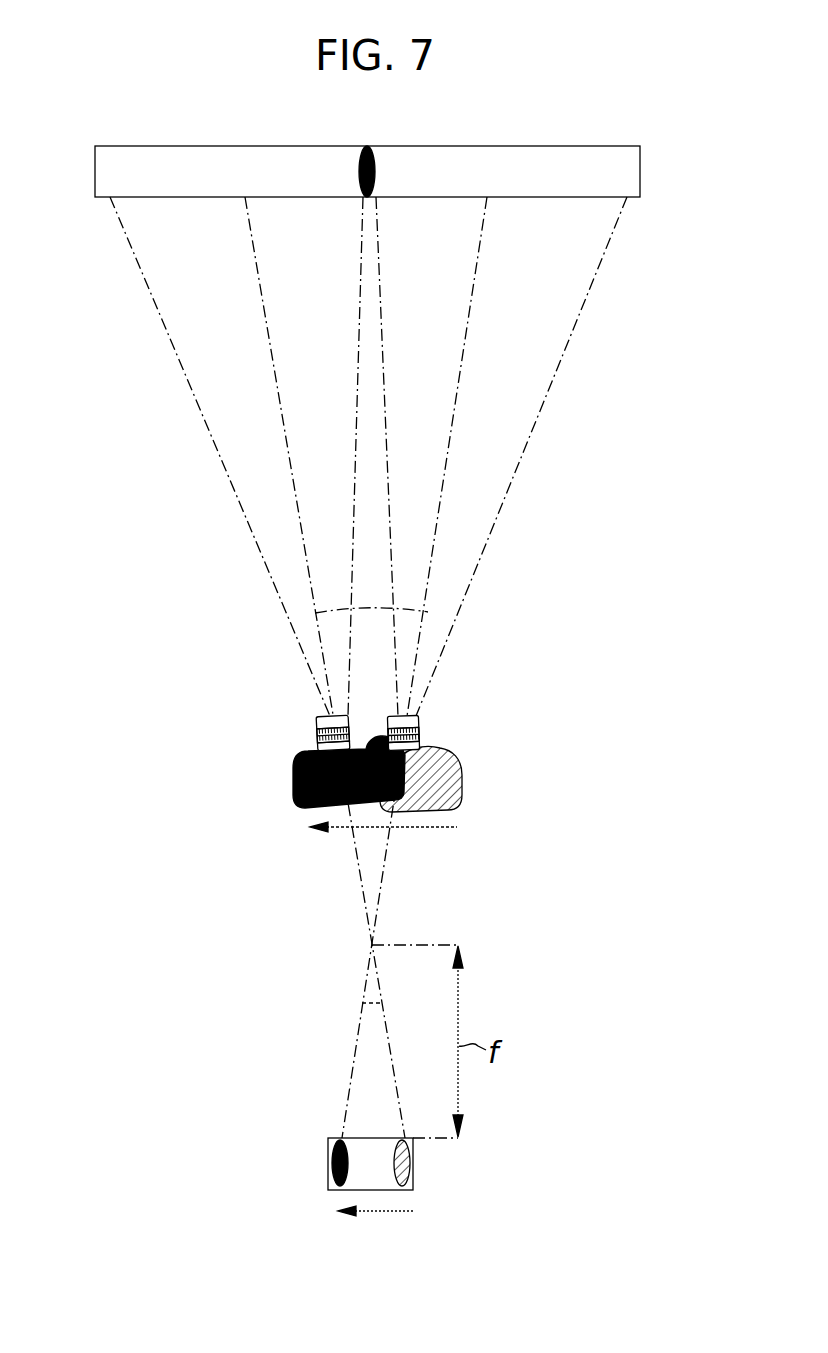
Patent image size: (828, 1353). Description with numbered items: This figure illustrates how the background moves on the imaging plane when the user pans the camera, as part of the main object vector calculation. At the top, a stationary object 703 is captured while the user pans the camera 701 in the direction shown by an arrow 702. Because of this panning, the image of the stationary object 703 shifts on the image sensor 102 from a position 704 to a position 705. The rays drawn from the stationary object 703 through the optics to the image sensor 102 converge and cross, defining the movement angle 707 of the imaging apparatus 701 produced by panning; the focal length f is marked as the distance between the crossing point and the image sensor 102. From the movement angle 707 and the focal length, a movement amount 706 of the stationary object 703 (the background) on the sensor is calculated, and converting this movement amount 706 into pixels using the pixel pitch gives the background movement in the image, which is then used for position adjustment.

The stationary object 703 is at (375, 173).
The camera 701 is at (464, 784).
The arrow 702 is at (425, 828).
The movement angle 707 is at (369, 1004).
The image sensor 102 is at (376, 1120).
The position 705 is at (328, 1160).
The position 704 is at (406, 1172).
The movement amount 706 is at (387, 1213).